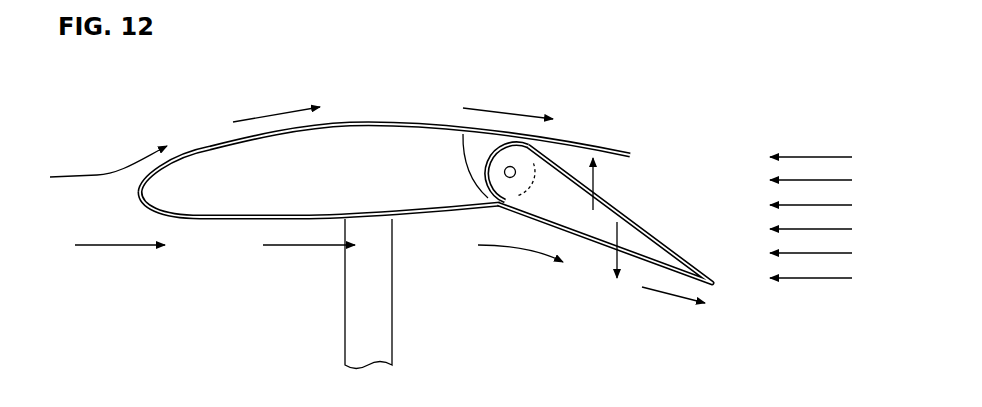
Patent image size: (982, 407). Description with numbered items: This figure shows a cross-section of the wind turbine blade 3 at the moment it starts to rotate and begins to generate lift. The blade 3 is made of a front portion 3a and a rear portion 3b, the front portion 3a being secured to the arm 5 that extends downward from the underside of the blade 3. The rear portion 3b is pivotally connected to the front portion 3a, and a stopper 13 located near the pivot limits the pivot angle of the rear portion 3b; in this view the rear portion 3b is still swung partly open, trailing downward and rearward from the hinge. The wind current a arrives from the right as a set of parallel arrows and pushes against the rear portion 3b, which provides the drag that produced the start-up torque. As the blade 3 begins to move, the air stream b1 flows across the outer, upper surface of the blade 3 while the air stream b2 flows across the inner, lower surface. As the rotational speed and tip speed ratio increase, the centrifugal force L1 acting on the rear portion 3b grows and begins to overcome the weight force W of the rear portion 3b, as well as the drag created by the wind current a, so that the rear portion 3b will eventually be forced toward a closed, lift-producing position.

The blade 3 is at (582, 90).
The front portion 3a is at (211, 148).
The rear portion 3b is at (673, 247).
The stopper 13 is at (468, 149).
The arm 5 is at (343, 335).
The wind current a is at (871, 146).
The air stream b1 is at (90, 154).
The air stream b2 is at (105, 266).
The centrifugal force L1 is at (577, 191).
The weight force W is at (617, 268).